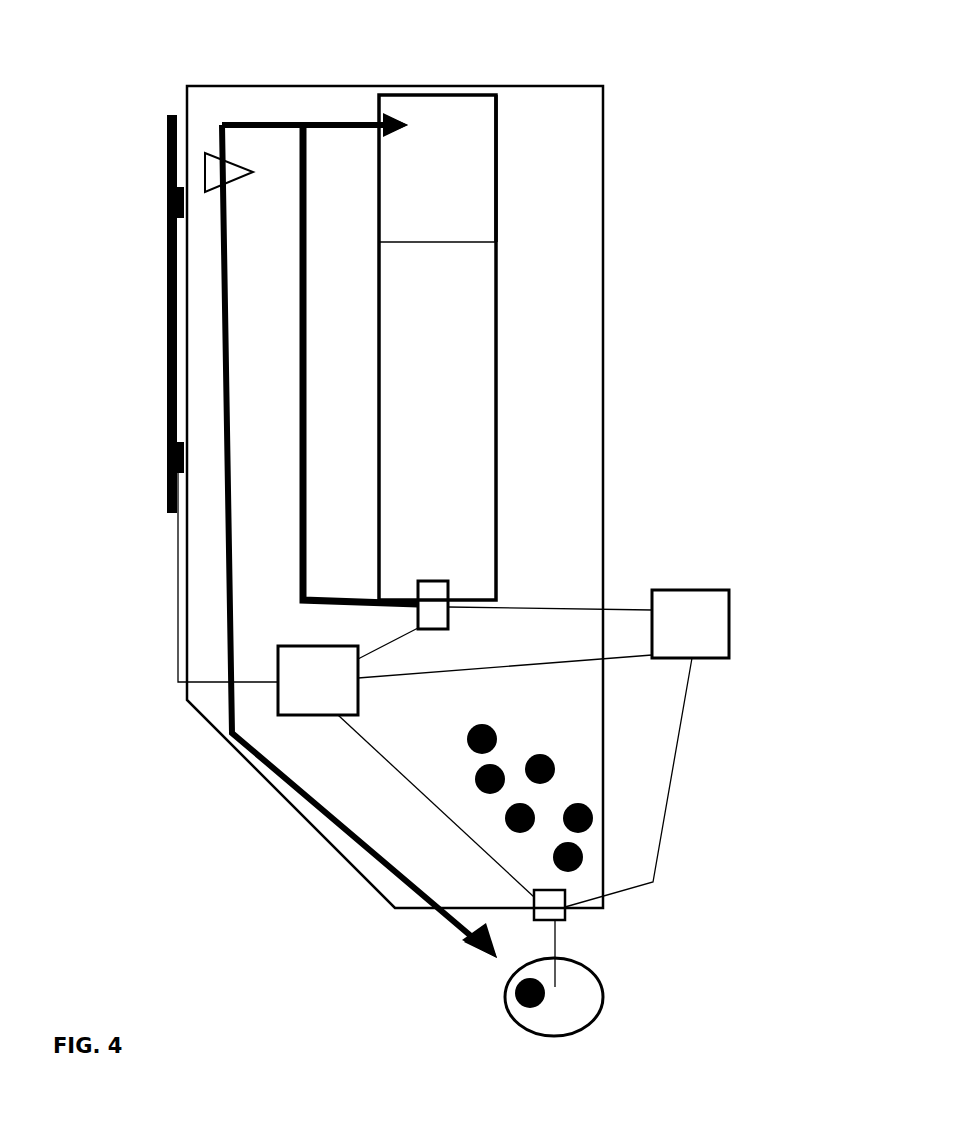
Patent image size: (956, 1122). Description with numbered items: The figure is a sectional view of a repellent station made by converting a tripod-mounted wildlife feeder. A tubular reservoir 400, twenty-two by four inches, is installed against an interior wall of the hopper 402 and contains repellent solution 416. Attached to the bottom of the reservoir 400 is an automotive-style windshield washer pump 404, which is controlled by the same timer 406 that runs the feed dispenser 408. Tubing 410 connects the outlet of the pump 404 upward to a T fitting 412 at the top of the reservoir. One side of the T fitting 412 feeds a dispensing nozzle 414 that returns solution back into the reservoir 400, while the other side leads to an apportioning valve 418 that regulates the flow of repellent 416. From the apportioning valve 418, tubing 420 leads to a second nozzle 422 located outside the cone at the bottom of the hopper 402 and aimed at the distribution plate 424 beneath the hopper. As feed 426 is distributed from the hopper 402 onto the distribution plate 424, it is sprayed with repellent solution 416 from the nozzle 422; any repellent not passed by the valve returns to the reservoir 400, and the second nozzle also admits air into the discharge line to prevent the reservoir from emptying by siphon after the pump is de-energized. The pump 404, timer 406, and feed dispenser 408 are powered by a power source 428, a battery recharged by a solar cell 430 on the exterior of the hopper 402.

The tubular reservoir 400 is at (496, 173).
The hopper 402 is at (573, 271).
The windshield washer pump 404 is at (440, 599).
The timer 406 is at (543, 748).
The feed dispenser 408 is at (565, 902).
The tubing 410 is at (300, 358).
The T fitting 412 is at (303, 122).
The dispensing nozzle 414 is at (406, 122).
The repellent solution 416 is at (437, 347).
The apportioning valve 418 is at (205, 173).
The tubing 420 is at (230, 609).
The second nozzle 422 is at (458, 949).
The distribution plate 424 is at (573, 987).
The feed 426 is at (505, 996).
The power source 428 is at (356, 685).
The solar cell 430 is at (167, 268).